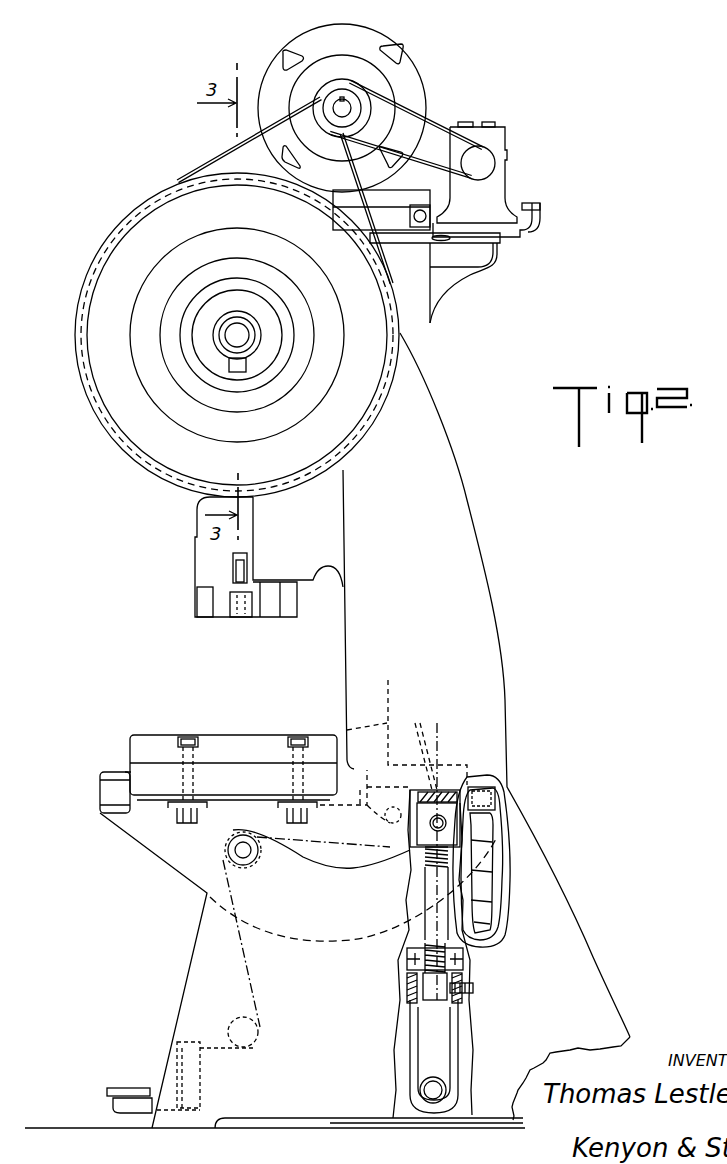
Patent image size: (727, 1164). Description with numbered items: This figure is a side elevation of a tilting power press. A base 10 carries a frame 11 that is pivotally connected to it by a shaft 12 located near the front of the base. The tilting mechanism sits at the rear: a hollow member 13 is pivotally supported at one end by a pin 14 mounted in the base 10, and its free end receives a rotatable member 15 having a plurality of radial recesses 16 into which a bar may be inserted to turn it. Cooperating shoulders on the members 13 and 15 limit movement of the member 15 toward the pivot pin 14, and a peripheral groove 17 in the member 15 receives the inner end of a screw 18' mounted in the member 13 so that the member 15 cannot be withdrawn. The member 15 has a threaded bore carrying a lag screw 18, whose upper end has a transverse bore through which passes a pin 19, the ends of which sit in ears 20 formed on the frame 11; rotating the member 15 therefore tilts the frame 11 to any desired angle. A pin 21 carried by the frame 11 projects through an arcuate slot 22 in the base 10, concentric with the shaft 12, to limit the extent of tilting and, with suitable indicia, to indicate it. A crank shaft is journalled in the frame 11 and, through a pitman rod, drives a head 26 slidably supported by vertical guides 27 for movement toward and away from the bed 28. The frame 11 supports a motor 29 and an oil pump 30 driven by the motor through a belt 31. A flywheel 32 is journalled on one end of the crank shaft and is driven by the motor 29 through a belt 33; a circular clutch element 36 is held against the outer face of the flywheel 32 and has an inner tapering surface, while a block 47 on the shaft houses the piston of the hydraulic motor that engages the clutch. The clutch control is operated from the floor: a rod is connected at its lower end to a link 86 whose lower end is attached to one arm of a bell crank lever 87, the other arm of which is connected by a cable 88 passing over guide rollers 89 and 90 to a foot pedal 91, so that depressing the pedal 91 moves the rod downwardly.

The base 10 is at (592, 945).
The frame 11 is at (484, 602).
The shaft 12 is at (236, 852).
The hollow member 13 is at (453, 1042).
The pin 14 is at (433, 1090).
The rotatable member 15 is at (463, 968).
The radial recesses 16 is at (440, 952).
The peripheral groove 17 is at (410, 987).
The lag screw 18 is at (404, 861).
The screw 18' is at (491, 993).
The pin 19 is at (445, 826).
The ears 20 is at (445, 790).
The pin 21 is at (495, 795).
The slot 22 is at (487, 867).
The head 26 is at (205, 572).
The vertical guides 27 is at (297, 510).
The bed 28 is at (225, 735).
The motor 29 is at (418, 65).
The oil pump 30 is at (500, 137).
The belt 31 is at (444, 125).
The flywheel 32 is at (112, 398).
The belt 33 is at (222, 152).
The circular clutch element 36 is at (138, 308).
The block 47 is at (208, 365).
The link 86 is at (427, 742).
The bell crank lever 87 is at (393, 751).
The cable 88 is at (350, 848).
The guide roller 89 is at (255, 866).
The guide roller 90 is at (232, 1018).
The foot pedal 91 is at (205, 1075).